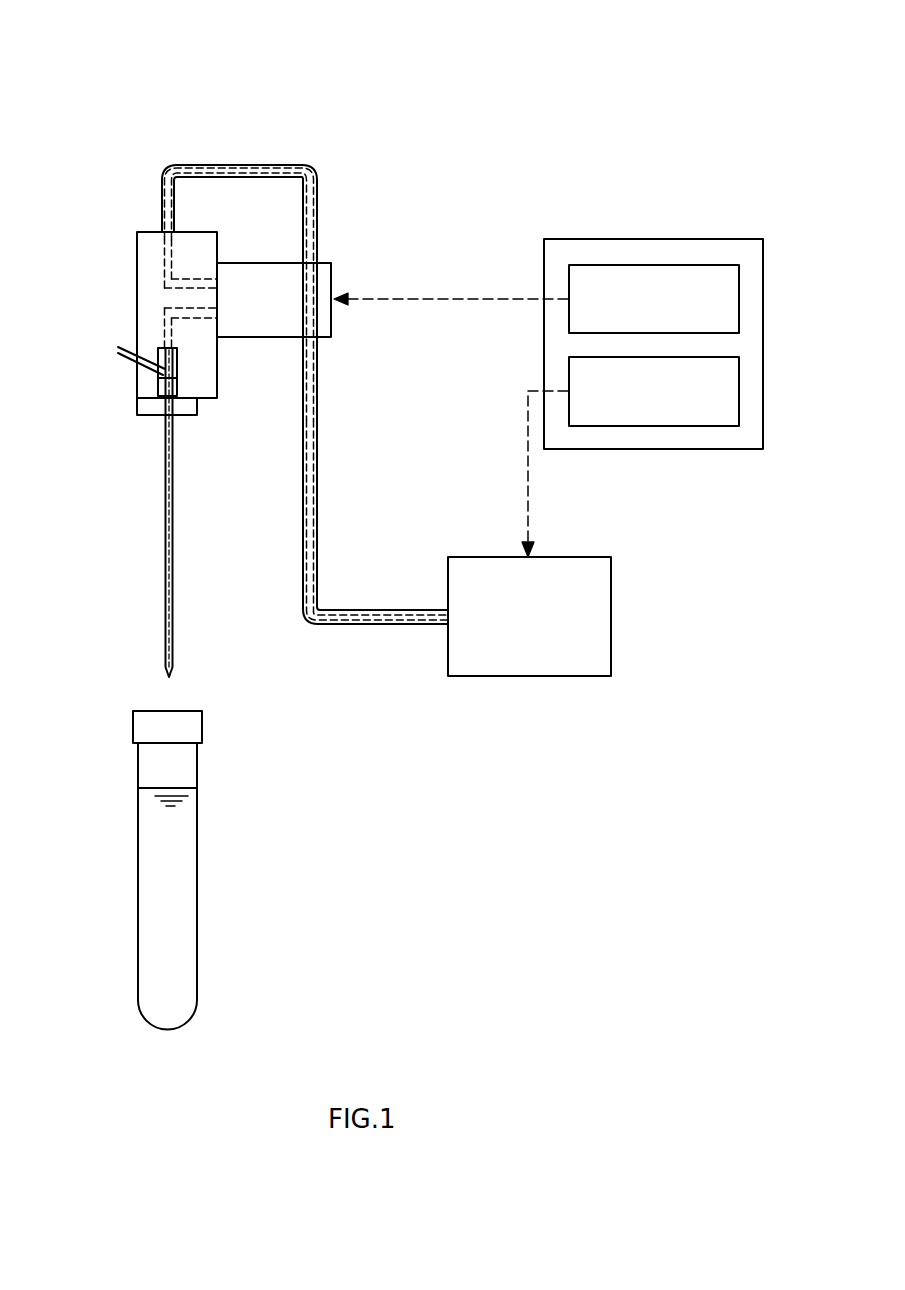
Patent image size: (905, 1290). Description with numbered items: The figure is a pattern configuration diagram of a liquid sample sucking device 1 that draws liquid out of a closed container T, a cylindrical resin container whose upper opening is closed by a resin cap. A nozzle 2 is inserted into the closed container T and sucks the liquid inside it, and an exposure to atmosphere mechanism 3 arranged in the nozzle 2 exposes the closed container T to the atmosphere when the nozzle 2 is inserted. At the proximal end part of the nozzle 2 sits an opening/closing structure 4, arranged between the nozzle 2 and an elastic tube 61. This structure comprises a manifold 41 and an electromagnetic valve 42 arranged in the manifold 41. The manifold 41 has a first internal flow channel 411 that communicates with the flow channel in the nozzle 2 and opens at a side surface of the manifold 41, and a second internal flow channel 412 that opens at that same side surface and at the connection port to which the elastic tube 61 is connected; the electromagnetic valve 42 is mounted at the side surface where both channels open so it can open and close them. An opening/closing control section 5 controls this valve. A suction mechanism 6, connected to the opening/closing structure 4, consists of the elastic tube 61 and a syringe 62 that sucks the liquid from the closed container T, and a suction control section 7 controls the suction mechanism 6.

The liquid sample sucking device 1 is at (187, 103).
The nozzle 2 is at (165, 500).
The exposure to atmosphere mechanism 3 is at (117, 350).
The opening/closing structure 4 is at (138, 230).
The manifold 41 is at (137, 250).
The first internal flow channel 411 is at (163, 320).
The second internal flow channel 412 is at (163, 288).
The electromagnetic valve 42 is at (267, 338).
The opening/closing control section 5 is at (655, 265).
The suction mechanism 6 is at (472, 490).
The elastic tube 61 is at (318, 205).
The syringe 62 is at (463, 556).
The suction control section 7 is at (655, 426).
The closed container T is at (138, 866).